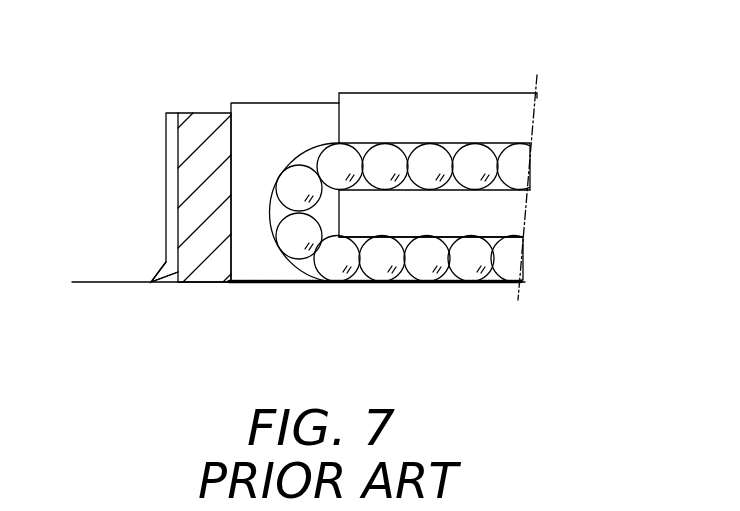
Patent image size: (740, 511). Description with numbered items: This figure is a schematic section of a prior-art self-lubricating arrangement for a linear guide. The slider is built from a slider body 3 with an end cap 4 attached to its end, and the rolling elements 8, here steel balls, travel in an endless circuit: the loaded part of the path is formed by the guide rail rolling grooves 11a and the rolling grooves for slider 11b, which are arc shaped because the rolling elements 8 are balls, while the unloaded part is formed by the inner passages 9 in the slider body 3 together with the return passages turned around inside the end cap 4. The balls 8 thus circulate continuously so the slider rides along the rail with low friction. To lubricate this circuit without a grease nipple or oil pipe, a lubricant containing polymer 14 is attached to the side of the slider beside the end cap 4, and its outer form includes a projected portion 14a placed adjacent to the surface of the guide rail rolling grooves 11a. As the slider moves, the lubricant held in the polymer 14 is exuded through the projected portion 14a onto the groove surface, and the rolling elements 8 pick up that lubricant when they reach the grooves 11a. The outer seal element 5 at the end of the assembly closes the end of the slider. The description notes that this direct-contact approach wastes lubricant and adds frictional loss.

The slider body 3 is at (417, 115).
The end cap 4 is at (283, 118).
The end seal 5 is at (168, 112).
The rolling elements 8 is at (474, 157).
The inner passages 9 is at (502, 145).
The guide rail rolling grooves 11a is at (417, 283).
The rolling grooves for slider 11b is at (467, 235).
The lubricant containing polymer 14 is at (208, 128).
The projected portion 14a is at (207, 275).